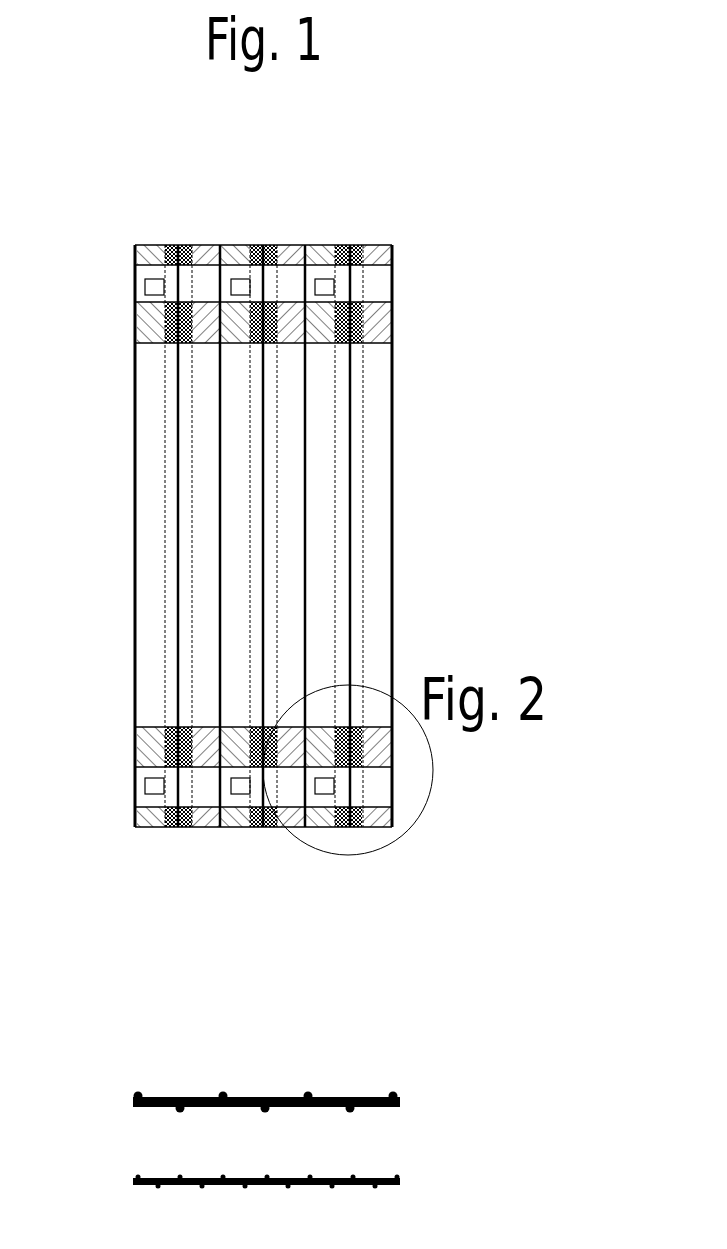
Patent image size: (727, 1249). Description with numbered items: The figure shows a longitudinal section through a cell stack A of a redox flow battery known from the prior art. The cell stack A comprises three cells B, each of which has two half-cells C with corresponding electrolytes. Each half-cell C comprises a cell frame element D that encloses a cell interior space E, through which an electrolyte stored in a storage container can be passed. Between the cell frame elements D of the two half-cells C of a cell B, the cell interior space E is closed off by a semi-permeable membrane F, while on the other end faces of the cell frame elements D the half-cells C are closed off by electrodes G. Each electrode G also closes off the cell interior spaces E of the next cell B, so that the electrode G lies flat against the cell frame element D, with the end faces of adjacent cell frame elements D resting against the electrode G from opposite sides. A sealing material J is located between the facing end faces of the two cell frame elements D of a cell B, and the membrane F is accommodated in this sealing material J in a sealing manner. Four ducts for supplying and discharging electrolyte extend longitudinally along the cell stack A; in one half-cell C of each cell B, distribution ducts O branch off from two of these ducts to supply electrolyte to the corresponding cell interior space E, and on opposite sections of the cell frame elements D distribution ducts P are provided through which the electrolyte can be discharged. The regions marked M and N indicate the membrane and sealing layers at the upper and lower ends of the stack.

The cell stack A is at (402, 468).
The cell B is at (266, 1127).
The half-cell C is at (266, 1204).
The cell frame element D is at (267, 905).
The cell interior space E is at (164, 532).
The semi-permeable membrane F is at (259, 207).
The electrode G is at (251, 207).
The sealing material J is at (268, 654).
The upper intermediate layer M is at (123, 282).
The lower intermediate layer N is at (405, 787).
The distribution duct O is at (179, 318).
The distribution duct P is at (184, 741).